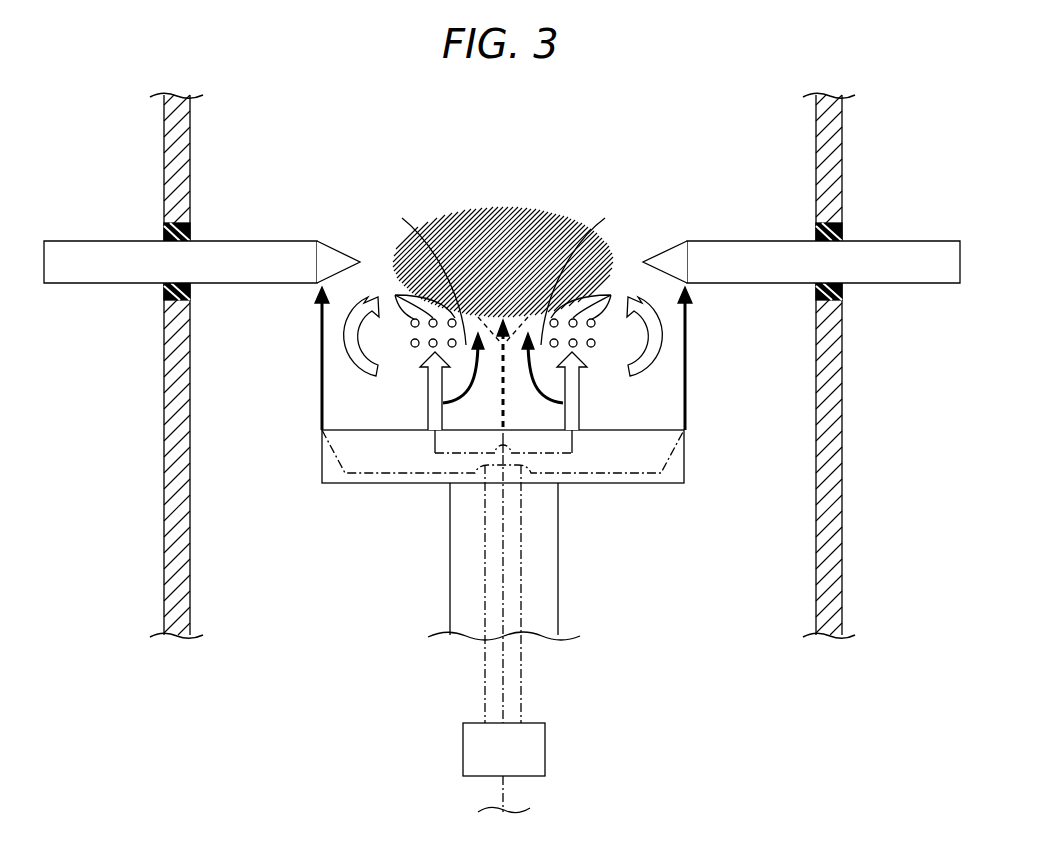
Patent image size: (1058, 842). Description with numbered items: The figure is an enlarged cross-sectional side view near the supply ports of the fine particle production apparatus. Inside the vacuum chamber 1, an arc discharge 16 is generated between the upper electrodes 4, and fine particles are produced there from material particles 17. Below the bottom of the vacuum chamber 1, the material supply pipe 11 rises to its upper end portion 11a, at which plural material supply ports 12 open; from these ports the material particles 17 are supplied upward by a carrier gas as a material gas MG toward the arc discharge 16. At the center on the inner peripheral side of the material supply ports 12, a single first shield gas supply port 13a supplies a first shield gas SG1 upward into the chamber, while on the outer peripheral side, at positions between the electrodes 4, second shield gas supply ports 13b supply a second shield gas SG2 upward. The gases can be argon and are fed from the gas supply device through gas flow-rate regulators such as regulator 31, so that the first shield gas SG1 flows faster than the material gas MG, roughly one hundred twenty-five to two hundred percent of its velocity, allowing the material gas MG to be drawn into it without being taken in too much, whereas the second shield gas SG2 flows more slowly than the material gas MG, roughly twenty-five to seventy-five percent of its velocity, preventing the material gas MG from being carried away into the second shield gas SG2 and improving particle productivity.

The vacuum chamber 1 is at (150, 148).
The upper electrodes 4 is at (100, 252).
The material supply pipe 11 is at (463, 593).
The upper end portion of material supply pipe 11a is at (383, 460).
The material supply ports 12 is at (436, 428).
The first shield gas supply port 13a is at (504, 428).
The second shield gas supply ports 13b is at (322, 428).
The arc discharge 16 is at (552, 222).
The material particles 17 is at (503, 311).
The gas flow-rate regulator 31 is at (533, 750).
The first shield gas SG1 is at (521, 330).
The second shield gas SG2 is at (321, 350).
The material gas MG is at (630, 392).